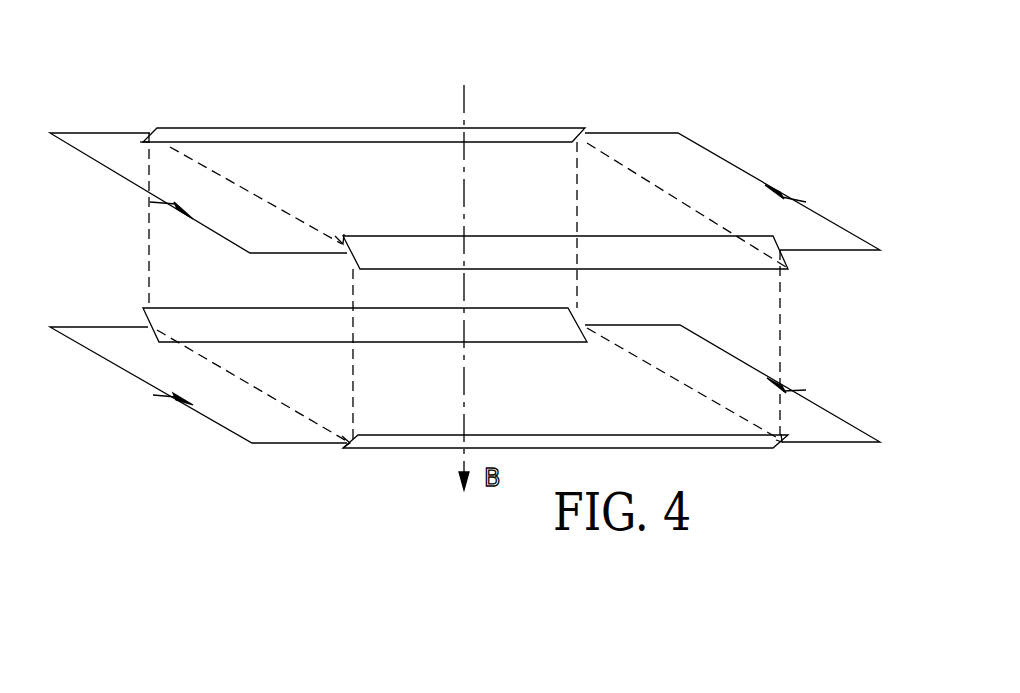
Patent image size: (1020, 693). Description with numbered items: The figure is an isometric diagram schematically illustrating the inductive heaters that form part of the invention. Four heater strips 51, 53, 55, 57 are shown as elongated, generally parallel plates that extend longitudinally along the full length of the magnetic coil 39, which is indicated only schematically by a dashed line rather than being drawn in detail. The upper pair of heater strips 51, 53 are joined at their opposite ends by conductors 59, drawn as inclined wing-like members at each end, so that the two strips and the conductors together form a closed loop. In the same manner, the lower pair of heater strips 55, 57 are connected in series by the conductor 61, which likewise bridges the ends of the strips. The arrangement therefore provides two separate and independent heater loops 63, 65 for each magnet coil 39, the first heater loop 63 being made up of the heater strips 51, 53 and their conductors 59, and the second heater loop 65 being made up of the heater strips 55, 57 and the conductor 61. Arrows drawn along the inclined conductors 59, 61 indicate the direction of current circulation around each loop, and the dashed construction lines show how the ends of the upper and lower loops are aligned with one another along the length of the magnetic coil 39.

The heater strip 51 is at (256, 128).
The heater strip 53 is at (785, 267).
The heater strip 55 is at (560, 323).
The heater strip 57 is at (423, 443).
The conductors 59 is at (91, 133).
The conductor 61 is at (100, 327).
The heater loop 63 is at (776, 157).
The heater loop 65 is at (309, 472).
The magnetic coil 39 is at (783, 407).